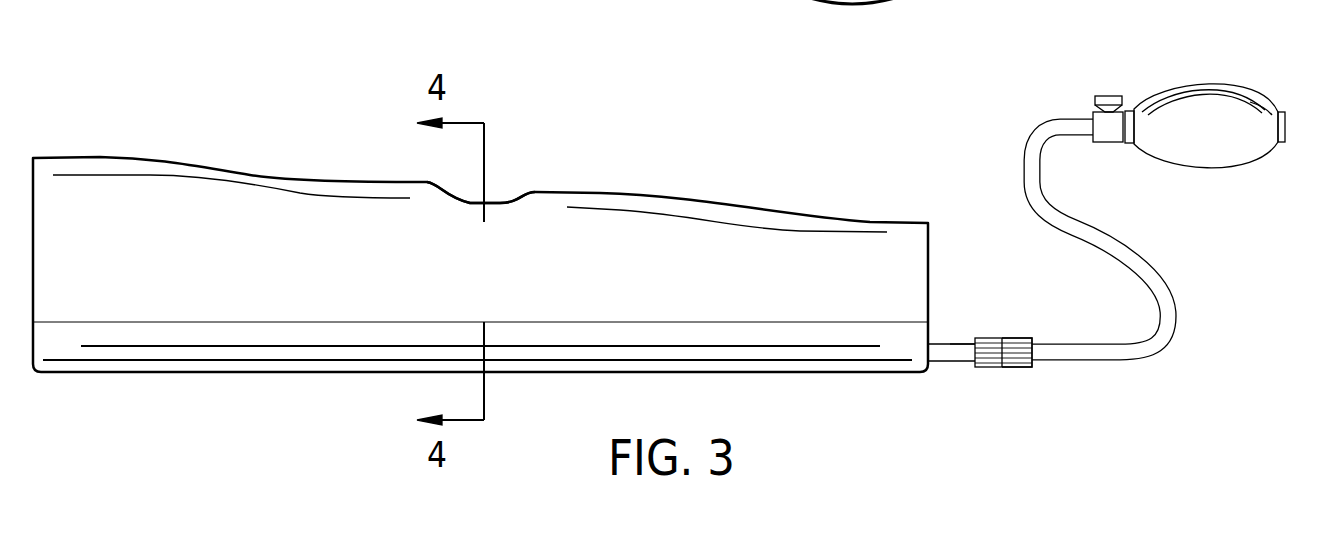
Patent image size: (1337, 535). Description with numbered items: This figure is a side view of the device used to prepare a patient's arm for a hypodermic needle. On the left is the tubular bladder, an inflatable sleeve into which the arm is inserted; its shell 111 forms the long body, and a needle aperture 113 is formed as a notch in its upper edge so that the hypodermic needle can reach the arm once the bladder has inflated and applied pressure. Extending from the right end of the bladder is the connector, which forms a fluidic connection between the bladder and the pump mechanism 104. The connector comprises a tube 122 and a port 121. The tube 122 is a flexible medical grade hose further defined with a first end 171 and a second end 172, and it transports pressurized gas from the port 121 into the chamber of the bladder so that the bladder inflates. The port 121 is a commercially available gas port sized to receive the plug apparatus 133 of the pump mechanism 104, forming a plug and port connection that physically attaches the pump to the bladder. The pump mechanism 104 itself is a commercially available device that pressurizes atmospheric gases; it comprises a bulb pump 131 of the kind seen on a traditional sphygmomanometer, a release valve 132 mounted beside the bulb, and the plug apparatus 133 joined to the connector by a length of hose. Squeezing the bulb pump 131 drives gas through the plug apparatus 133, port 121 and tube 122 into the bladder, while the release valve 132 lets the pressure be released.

The pump mechanism 104 is at (1185, 160).
The shell 111 is at (623, 225).
The needle aperture 113 is at (497, 200).
The port 121 is at (988, 367).
The tube 122 is at (952, 362).
The bulb pump 131 is at (1227, 107).
The release valve 132 is at (1109, 96).
The plug apparatus 133 is at (1027, 367).
The first end 171 is at (967, 343).
The second end 172 is at (930, 343).